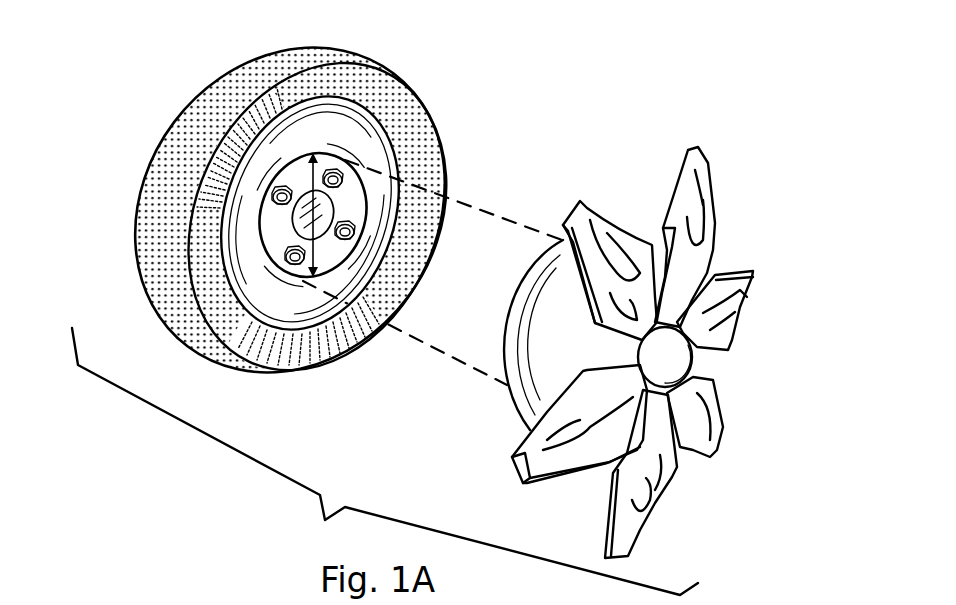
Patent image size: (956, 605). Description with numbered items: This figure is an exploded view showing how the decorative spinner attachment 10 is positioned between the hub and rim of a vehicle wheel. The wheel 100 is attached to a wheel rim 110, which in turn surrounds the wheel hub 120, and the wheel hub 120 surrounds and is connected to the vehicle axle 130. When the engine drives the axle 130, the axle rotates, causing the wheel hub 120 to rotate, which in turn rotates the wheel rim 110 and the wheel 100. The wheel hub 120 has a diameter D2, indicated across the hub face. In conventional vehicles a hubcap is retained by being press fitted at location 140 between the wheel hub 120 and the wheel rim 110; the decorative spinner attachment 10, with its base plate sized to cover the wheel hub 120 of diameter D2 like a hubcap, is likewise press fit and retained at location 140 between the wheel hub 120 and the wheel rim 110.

The decorative spinner attachment 10 is at (752, 360).
The wheel 100 is at (377, 78).
The wheel rim 110 is at (361, 130).
The wheel hub 120 is at (307, 165).
The vehicle axle 130 is at (292, 222).
The location 140 is at (311, 151).
The diameter D2 is at (302, 212).